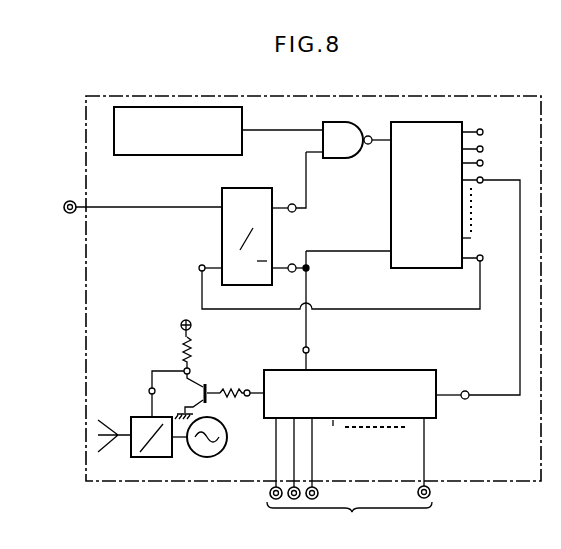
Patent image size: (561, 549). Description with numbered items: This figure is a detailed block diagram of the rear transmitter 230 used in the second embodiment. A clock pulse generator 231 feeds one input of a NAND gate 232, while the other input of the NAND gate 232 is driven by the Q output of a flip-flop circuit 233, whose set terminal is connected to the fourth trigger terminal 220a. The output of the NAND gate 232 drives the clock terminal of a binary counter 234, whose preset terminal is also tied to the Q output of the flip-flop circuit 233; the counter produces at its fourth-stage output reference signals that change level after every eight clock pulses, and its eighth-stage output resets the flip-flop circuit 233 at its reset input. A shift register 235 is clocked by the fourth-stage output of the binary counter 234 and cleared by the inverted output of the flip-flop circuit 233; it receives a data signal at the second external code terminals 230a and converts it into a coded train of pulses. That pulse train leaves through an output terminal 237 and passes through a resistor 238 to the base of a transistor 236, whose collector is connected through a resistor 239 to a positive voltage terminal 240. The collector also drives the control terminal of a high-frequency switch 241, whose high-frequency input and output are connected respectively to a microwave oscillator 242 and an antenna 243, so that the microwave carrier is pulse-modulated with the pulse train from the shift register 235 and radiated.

The rear transmitter 230 is at (158, 482).
The fourth trigger terminal 220a is at (64, 204).
The clock pulse generator 231 is at (186, 107).
The NAND gate 232 is at (348, 128).
The flip-flop circuit 233 is at (266, 188).
The binary counter 234 is at (446, 122).
The shift register 235 is at (345, 370).
The second external code terminals 230a is at (349, 476).
The positive voltage terminal 240 is at (170, 322).
The resistor 239 is at (206, 355).
The transistor 236 is at (212, 380).
The resistor 238 is at (237, 398).
The output terminal 237 is at (249, 381).
The high-frequency switch 241 is at (152, 457).
The antenna 243 is at (117, 420).
The microwave oscillator 242 is at (226, 445).